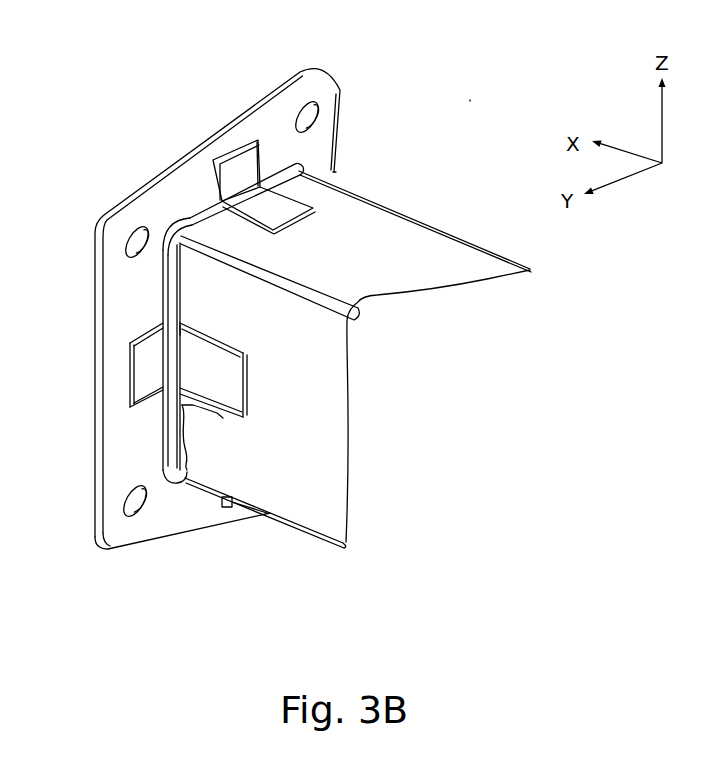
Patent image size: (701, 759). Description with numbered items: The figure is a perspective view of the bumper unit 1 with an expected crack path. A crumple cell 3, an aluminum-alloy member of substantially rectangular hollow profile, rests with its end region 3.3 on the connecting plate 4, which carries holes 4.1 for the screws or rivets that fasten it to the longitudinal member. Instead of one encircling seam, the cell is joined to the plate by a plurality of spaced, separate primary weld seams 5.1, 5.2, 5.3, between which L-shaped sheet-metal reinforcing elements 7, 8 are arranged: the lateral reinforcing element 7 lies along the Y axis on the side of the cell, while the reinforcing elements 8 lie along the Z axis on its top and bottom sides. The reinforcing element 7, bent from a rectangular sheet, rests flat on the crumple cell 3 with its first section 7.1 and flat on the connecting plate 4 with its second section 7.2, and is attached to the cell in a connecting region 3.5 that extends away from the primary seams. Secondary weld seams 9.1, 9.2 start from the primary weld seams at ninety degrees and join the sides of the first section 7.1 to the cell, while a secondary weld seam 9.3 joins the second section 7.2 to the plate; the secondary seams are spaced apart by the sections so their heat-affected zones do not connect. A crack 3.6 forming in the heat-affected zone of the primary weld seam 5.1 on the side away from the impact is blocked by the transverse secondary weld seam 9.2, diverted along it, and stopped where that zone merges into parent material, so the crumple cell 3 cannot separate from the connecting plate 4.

The bumper unit 1 is at (467, 125).
The crumple cell 3 is at (443, 257).
The end region 3.3 is at (177, 272).
The connecting region 3.5 is at (197, 335).
The crack 3.6 is at (207, 412).
The connecting plate 4 is at (200, 185).
The holes 4.1 is at (313, 106).
The primary weld seam 5.1 is at (170, 425).
The primary weld seam 5.2 is at (172, 220).
The primary weld seam 5.3 is at (288, 170).
The reinforcing element 7 is at (165, 367).
The first section 7.1 is at (207, 382).
The second section 7.2 is at (152, 363).
The reinforcing element 8 is at (260, 182).
The secondary weld seam 9.1 is at (232, 337).
The secondary weld seam 9.2 is at (223, 413).
The secondary weld seam 9.3 is at (150, 333).